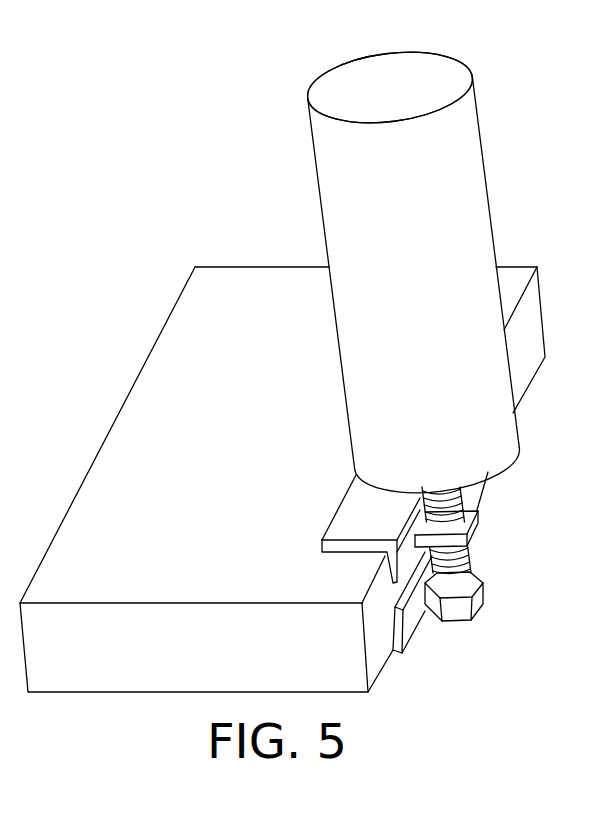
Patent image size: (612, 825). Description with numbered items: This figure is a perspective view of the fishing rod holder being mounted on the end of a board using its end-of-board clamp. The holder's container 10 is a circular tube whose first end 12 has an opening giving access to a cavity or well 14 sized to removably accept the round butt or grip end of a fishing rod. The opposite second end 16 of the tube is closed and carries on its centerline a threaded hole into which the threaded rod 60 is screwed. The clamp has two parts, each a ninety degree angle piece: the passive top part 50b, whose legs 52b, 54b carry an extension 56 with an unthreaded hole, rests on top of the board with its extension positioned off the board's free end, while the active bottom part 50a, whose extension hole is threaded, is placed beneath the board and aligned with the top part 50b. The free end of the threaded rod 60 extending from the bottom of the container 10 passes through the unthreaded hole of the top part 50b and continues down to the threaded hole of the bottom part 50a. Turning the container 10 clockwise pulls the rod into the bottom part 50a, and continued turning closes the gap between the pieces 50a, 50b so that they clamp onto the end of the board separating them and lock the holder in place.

The container 10 is at (470, 198).
The first end 12 is at (446, 56).
The cavity or well 14 is at (338, 98).
The second end 16 is at (475, 462).
The active bottom part of end-of-board clamp 50a is at (418, 625).
The passive top part of end-of-board clamp 50b is at (477, 520).
The leg of the passive angle piece 52b is at (384, 583).
The leg of the passive angle piece 54b is at (342, 530).
The extension 56 is at (485, 595).
The threaded rod 60 is at (460, 555).